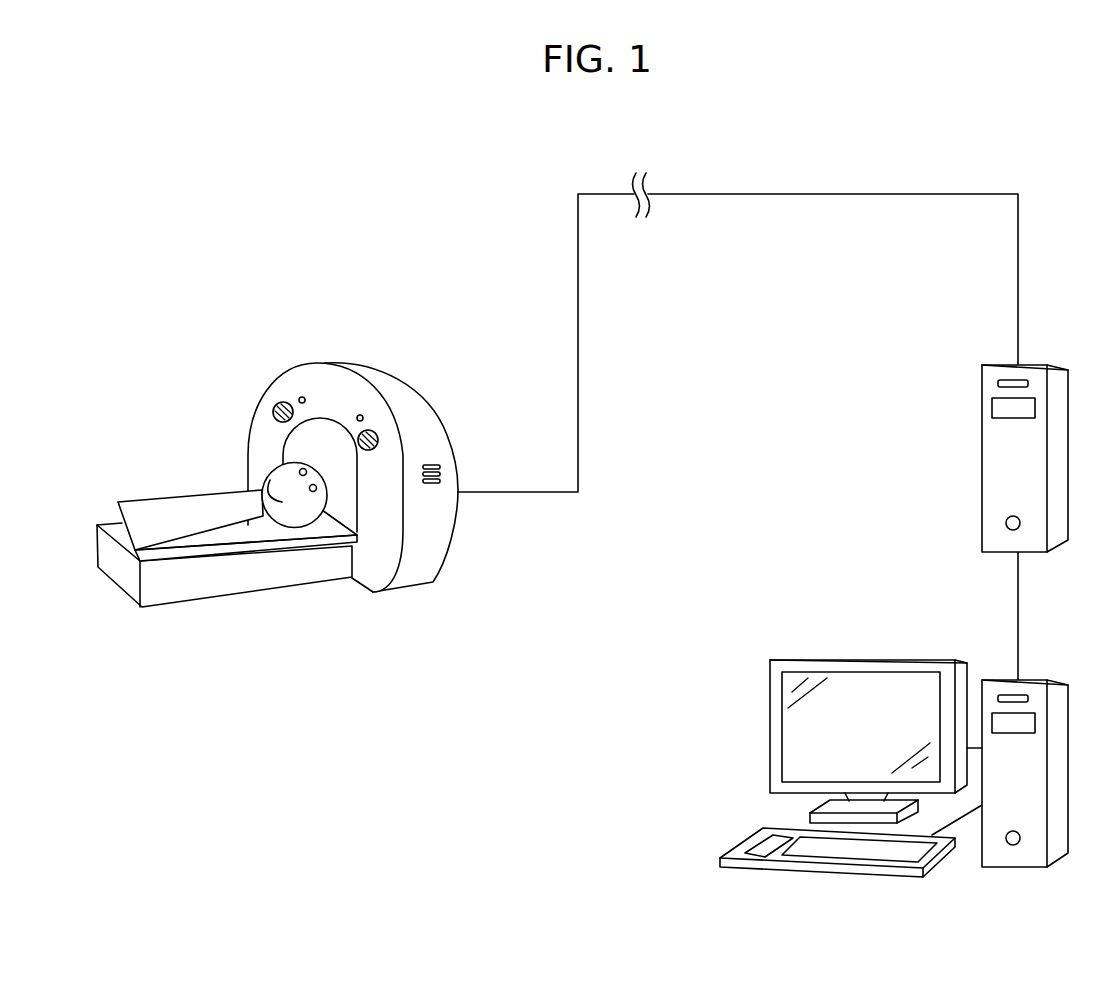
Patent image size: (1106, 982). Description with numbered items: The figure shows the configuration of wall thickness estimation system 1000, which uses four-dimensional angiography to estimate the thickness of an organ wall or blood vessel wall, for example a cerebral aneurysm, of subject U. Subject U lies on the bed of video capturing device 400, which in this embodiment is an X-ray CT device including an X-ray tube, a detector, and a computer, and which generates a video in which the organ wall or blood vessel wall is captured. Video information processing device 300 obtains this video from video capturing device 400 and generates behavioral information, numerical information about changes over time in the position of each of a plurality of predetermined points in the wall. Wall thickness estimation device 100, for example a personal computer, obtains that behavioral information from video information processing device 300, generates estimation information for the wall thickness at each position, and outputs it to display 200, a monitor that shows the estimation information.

The wall thickness estimation system 1000 is at (395, 173).
The video capturing device 400 is at (383, 373).
The video information processing device 300 is at (1053, 363).
The display 200 is at (870, 637).
The wall thickness estimation device 100 is at (1053, 678).
The subject U is at (195, 492).